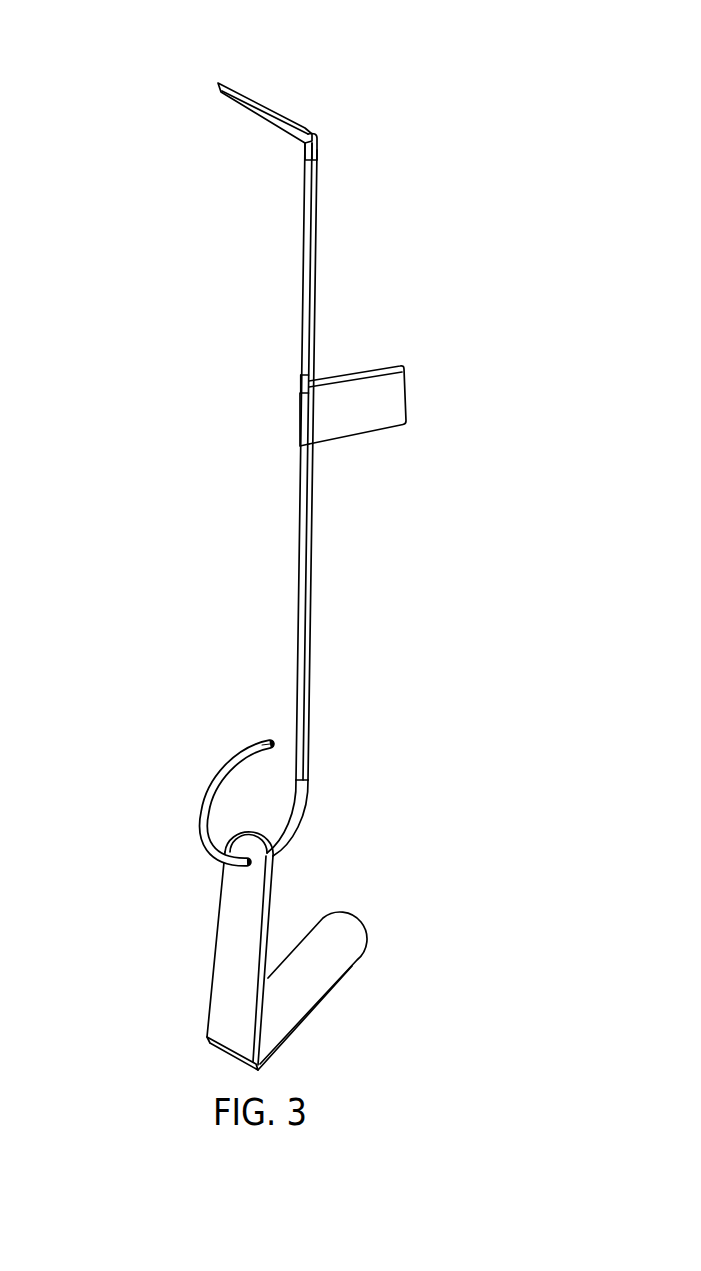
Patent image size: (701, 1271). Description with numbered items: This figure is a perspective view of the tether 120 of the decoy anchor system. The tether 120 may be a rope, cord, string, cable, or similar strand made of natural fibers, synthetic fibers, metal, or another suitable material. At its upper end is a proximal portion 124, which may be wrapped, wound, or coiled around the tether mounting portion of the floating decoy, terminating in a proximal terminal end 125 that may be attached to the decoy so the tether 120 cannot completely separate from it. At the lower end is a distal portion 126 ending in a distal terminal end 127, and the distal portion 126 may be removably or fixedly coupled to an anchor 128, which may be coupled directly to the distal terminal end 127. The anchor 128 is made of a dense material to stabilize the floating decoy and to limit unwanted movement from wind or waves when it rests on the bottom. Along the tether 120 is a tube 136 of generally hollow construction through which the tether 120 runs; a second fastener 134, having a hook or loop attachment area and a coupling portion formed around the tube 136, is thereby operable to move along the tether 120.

The tether 120 is at (193, 461).
The proximal portion 124 is at (352, 113).
The proximal terminal end 125 is at (276, 82).
The distal portion 126 is at (164, 797).
The distal terminal end 127 is at (198, 707).
The anchor 128 is at (317, 925).
The second fastener 134 is at (388, 424).
The tube 136 is at (215, 347).